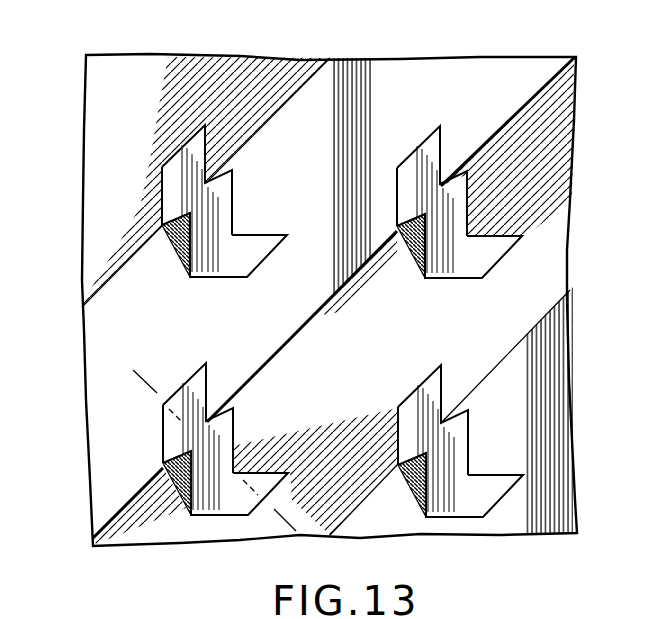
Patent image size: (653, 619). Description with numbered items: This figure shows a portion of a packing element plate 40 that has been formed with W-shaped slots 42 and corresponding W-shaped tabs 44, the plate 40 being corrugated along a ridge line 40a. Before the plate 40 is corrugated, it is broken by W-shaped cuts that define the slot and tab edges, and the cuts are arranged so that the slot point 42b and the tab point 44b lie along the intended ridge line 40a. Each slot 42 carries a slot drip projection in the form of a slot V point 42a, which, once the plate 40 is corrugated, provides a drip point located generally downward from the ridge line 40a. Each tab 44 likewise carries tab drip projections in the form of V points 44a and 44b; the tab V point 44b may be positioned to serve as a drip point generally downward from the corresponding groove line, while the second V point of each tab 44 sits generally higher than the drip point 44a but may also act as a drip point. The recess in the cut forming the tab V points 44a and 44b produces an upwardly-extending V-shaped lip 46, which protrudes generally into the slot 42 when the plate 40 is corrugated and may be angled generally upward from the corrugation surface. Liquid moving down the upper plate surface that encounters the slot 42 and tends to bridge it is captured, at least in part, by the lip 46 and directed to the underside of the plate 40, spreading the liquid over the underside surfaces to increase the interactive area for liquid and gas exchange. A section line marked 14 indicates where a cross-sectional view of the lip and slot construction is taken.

The packing element plate 40 is at (430, 74).
The fold ridge of plate 40a is at (530, 92).
The W-shaped slot 42 is at (395, 320).
The slot V point 42a is at (241, 469).
The slot point 42b is at (213, 418).
The W-shaped tab 44 is at (323, 321).
The tab V point 44a is at (197, 279).
The tab V point 44b is at (170, 212).
The V-shaped lip 46 is at (410, 252).
The section line 14- 14 is at (148, 378).